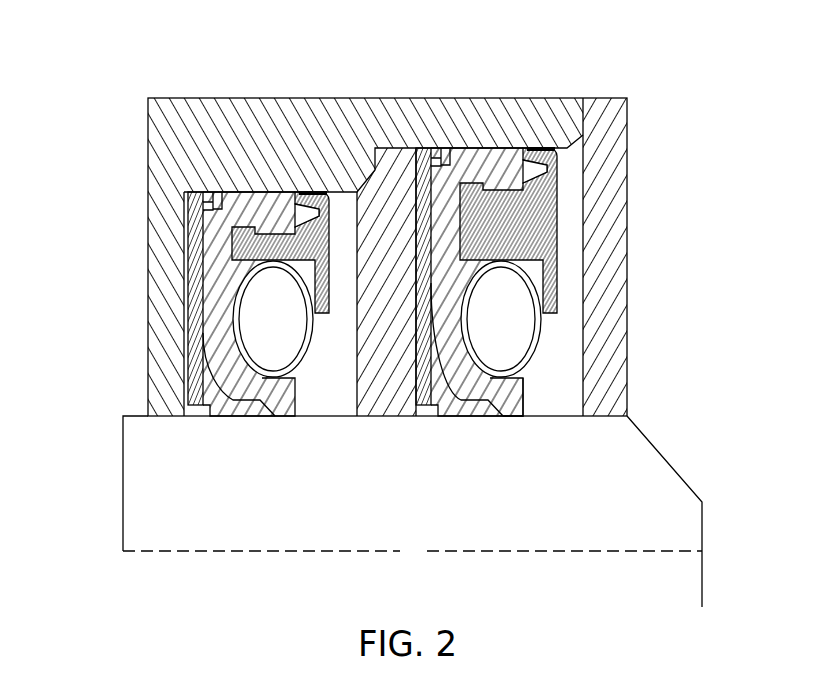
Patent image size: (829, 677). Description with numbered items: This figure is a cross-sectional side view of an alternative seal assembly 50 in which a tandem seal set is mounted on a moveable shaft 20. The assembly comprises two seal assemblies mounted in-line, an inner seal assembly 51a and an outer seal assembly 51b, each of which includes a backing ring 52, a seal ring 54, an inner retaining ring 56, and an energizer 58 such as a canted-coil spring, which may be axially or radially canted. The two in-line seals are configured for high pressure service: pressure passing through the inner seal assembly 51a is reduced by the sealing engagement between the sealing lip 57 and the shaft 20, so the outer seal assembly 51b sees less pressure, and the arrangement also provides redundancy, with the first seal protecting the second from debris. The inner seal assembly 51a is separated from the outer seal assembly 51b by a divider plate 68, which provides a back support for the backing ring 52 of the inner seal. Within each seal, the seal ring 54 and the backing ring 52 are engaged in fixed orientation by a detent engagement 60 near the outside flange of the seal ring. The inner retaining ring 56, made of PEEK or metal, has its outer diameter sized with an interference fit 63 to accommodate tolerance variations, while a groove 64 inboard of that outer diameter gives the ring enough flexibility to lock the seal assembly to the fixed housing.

The shaft 20 is at (641, 590).
The alternative seal assembly 50 is at (131, 72).
The inner seal assembly 51a is at (641, 193).
The outer seal assembly 51b is at (110, 357).
The backing ring 52 is at (428, 150).
The seal ring 54 is at (295, 402).
The inner retaining ring 56 is at (533, 242).
The sealing lip 57 is at (513, 410).
The energizer 58 is at (303, 300).
The detent engagement 60 is at (223, 194).
The interference fit 63 is at (321, 191).
The groove 64 is at (306, 191).
The divider plate 68 is at (383, 402).